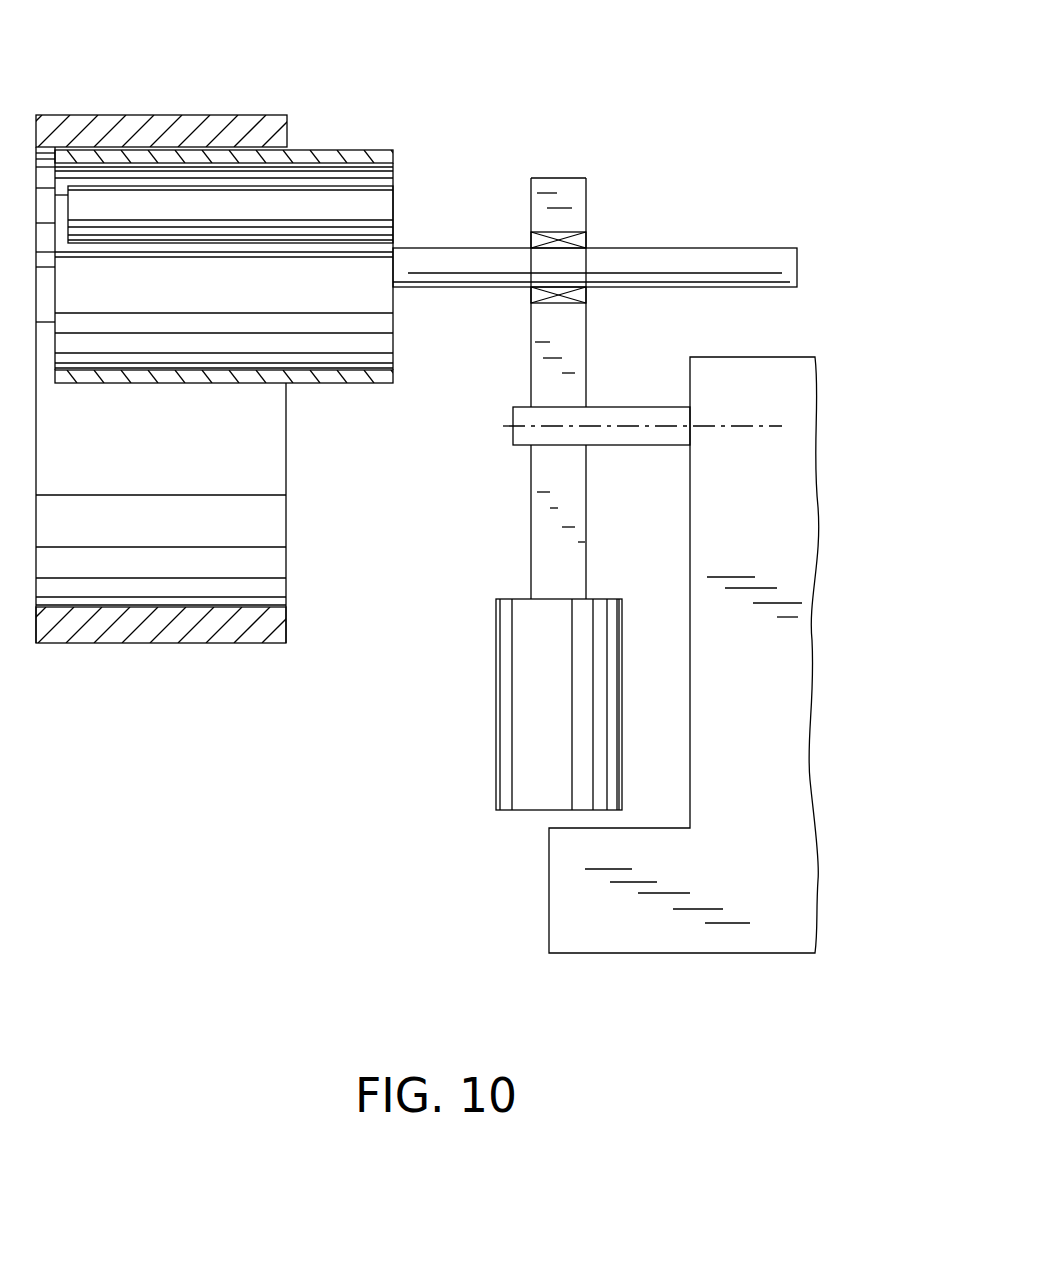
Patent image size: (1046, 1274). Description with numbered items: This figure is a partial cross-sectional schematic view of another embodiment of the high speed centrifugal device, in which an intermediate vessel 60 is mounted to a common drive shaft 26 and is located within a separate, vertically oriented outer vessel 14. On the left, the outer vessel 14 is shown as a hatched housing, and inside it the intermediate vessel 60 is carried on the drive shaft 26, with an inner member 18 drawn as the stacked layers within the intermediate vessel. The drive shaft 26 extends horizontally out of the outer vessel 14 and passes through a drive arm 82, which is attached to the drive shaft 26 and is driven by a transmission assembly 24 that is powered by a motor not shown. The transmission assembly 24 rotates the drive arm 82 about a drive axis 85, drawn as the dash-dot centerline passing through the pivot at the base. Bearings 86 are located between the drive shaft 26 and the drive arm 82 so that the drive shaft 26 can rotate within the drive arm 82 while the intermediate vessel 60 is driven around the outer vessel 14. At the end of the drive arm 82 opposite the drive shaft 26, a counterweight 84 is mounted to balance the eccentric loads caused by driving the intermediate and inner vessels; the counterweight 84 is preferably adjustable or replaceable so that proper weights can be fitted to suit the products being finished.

The outer vessel 14 is at (182, 115).
The inner member 18 is at (248, 245).
The intermediate vessel 60 is at (342, 385).
The drive shaft 26 is at (457, 258).
The bearings 86 is at (587, 238).
The drive arm 82 is at (548, 552).
The drive axis 85 is at (493, 426).
The counterweight 84 is at (525, 737).
The transmission assembly 24 is at (797, 710).